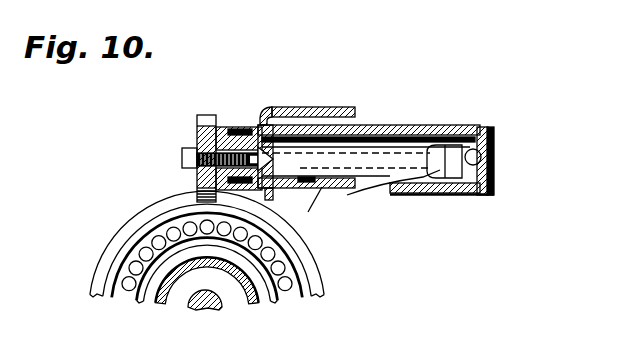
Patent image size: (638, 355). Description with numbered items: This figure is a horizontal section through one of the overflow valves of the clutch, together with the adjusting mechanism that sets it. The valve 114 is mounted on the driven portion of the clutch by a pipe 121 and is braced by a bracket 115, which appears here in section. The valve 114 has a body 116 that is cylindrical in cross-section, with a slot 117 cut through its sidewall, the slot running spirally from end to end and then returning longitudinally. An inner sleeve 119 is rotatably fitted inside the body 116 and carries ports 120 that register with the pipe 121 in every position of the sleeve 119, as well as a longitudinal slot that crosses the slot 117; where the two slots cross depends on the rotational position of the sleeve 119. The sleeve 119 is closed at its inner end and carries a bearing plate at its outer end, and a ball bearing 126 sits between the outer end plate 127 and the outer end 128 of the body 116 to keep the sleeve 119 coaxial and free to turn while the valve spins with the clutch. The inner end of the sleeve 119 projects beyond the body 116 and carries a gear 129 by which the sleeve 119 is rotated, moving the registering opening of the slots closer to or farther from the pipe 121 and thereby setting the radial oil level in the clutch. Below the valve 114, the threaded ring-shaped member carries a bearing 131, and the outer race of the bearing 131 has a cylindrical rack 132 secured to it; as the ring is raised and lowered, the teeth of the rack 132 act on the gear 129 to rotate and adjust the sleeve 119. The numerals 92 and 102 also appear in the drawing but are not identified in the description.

The shaft 92 is at (205, 310).
The inner sleeve 102 is at (168, 305).
The valve 114 is at (376, 159).
The bracket 115 is at (344, 107).
The body 116 is at (366, 126).
The slot 117 is at (382, 183).
The inner sleeve 119 is at (366, 188).
The ports 120 is at (310, 183).
The pipe 121 is at (447, 194).
The ball bearing 126 is at (482, 158).
The outer end plate 127 is at (479, 127).
The outer end of valve body 128 is at (494, 141).
The gear 129 is at (214, 127).
The bearing 131 is at (297, 298).
The rack 132 is at (122, 225).